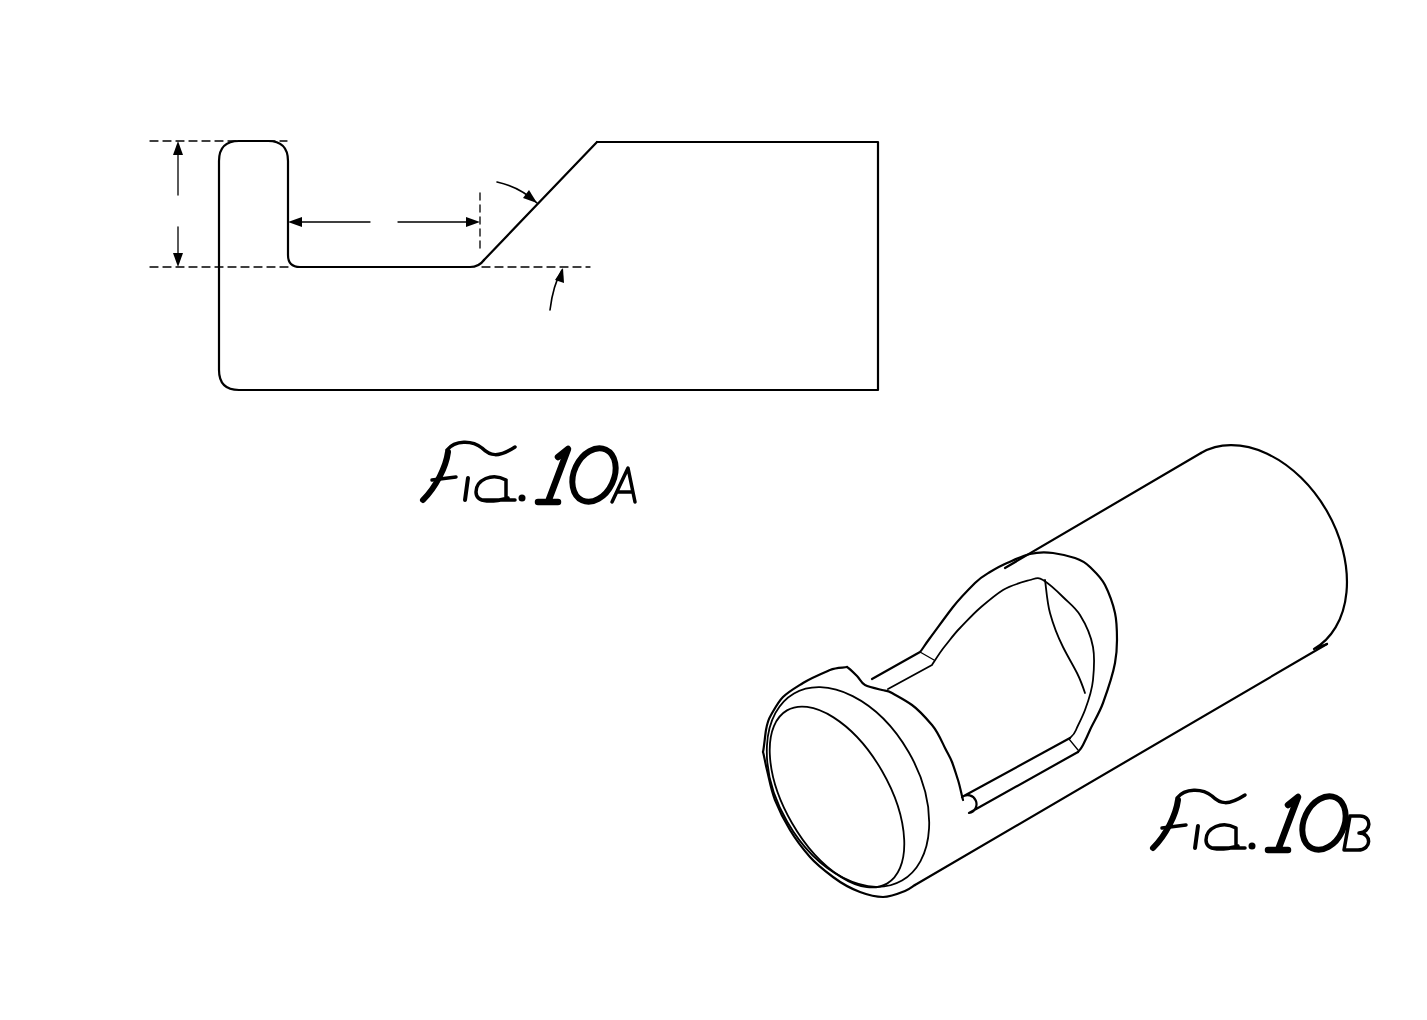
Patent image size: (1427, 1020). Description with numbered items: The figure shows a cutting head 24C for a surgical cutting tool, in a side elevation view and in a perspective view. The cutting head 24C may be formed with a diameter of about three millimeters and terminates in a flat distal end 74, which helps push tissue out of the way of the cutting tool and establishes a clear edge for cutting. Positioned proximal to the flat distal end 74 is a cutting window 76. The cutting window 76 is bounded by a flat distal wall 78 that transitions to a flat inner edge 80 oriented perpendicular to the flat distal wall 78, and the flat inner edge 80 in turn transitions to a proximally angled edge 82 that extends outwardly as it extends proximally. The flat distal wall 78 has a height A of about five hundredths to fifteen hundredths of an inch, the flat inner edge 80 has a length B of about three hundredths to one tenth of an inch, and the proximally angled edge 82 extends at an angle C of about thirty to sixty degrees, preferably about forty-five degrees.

In FIG. 10A, the cutting head 24C is at (712, 86).
In FIG. 10B, the cutting head 24C is at (1328, 435).
In FIG. 10A, the flat distal end 74 is at (219, 315).
In FIG. 10B, the flat distal end 74 is at (800, 777).
In FIG. 10A, the cutting window 76 is at (395, 153).
In FIG. 10B, the cutting window 76 is at (990, 648).
In FIG. 10A, the flat distal wall 78 is at (253, 180).
In FIG. 10A, the flat inner edge 80 is at (361, 267).
In FIG. 10B, the flat inner edge 80 is at (1030, 767).
In FIG. 10A, the proximally angled edge 82 is at (571, 166).
In FIG. 10B, the proximally angled edge 82 is at (1007, 576).